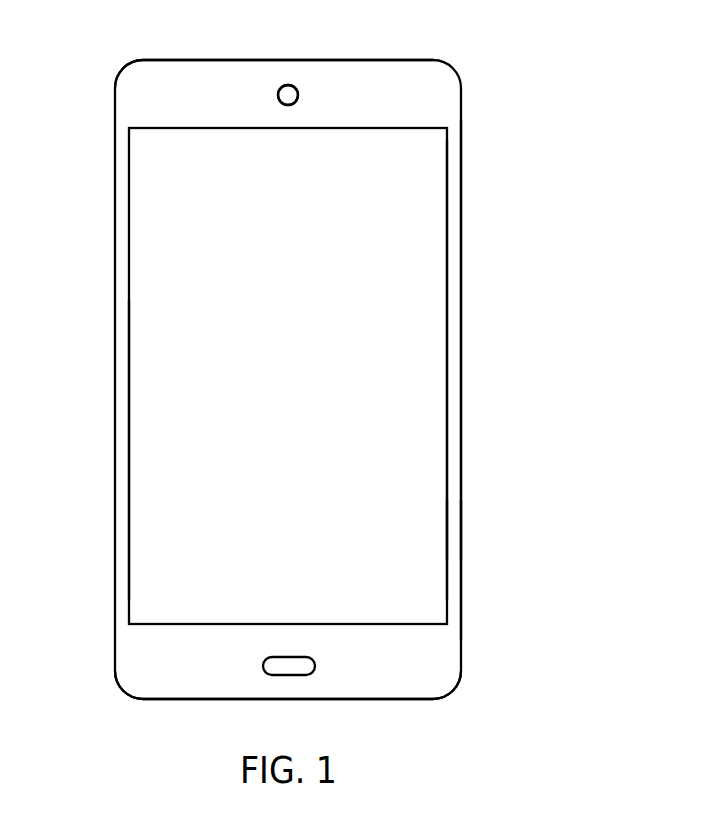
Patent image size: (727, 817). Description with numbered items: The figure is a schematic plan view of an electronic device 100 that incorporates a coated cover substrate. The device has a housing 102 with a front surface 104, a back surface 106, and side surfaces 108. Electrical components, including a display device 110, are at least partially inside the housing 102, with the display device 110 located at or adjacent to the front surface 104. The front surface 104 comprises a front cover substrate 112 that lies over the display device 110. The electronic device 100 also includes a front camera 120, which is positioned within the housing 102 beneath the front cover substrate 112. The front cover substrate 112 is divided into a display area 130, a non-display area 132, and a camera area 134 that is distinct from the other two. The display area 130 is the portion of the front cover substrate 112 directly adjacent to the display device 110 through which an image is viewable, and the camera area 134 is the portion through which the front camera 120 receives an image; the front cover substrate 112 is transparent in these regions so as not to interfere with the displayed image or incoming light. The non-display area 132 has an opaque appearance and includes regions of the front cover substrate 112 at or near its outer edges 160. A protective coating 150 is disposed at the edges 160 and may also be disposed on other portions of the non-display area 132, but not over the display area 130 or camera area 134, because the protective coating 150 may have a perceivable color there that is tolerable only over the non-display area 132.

The electronic device 100 is at (492, 112).
The housing 102 is at (138, 87).
The front surface 104 is at (432, 663).
The back surface 106 is at (147, 313).
The side surfaces 108 is at (463, 445).
The display device 110 is at (412, 285).
The front cover substrate 112 is at (153, 470).
The front camera 120 is at (293, 85).
The display area 130 is at (432, 522).
The non-display area 132 is at (353, 677).
The camera area 134 is at (283, 85).
The protective coating 150 is at (133, 680).
The outer edges 160 is at (160, 60).